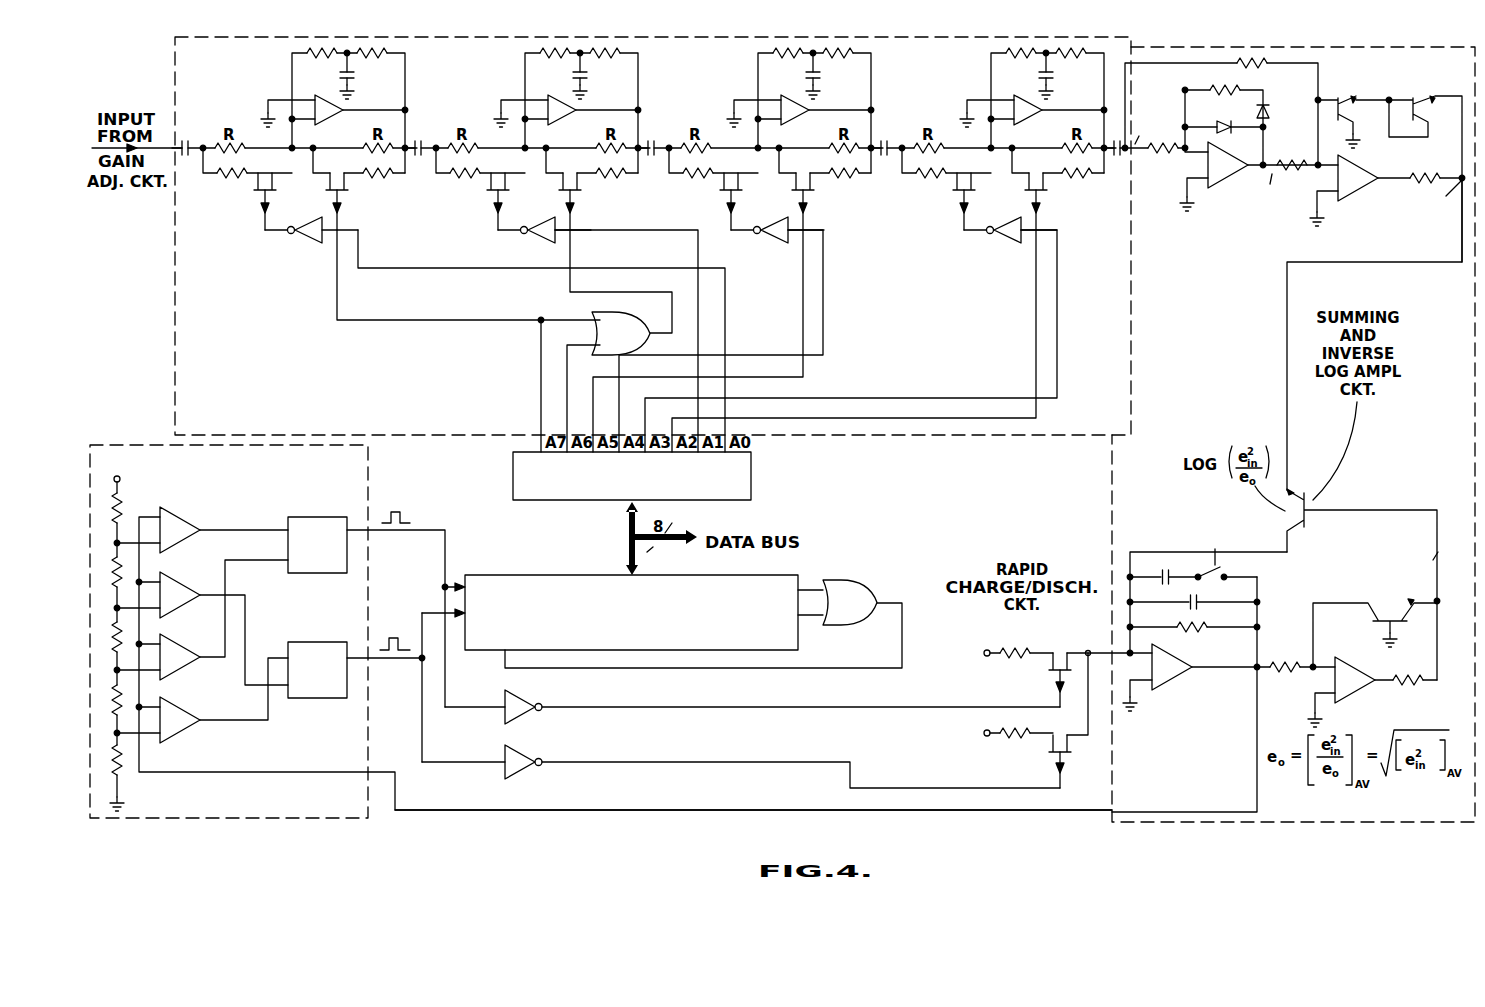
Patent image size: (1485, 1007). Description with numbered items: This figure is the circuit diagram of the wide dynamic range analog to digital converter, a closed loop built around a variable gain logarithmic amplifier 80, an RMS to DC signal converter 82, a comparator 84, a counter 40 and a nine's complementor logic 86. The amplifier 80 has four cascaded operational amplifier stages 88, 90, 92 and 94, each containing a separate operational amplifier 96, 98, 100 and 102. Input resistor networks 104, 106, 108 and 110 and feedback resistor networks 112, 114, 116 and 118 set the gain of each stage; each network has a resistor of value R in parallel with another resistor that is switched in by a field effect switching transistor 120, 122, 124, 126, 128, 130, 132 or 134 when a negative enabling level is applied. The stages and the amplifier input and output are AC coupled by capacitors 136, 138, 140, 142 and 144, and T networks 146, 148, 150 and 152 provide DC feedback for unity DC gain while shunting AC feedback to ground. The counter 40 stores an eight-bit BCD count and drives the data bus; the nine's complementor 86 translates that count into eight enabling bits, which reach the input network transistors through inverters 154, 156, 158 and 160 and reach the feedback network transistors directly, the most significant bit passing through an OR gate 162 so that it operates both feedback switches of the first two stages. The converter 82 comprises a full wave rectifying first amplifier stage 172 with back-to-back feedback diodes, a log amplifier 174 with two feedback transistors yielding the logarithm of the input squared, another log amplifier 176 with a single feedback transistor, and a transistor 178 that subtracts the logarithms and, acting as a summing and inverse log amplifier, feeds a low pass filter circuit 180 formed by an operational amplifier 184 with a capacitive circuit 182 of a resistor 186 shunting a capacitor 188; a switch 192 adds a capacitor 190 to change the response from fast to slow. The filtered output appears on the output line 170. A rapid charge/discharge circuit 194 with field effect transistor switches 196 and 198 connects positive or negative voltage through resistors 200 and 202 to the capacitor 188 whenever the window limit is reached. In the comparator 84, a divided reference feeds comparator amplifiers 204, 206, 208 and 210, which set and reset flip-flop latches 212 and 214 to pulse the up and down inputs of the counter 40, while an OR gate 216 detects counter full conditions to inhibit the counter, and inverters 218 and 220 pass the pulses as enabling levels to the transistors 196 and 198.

The counter 40 is at (596, 575).
The variable gain logarithmic amplifier 80 is at (360, 37).
The RMS to DC signal converter 82 is at (1386, 822).
The comparator 84 is at (601, 646).
The nine's complementor logic 86 is at (752, 480).
The first operational amplifier stage 88 is at (334, 110).
The second operational amplifier stage 90 is at (567, 110).
The third operational amplifier stage 92 is at (800, 110).
The fourth operational amplifier stage 94 is at (1033, 110).
The operational amplifier 96 is at (330, 96).
The operational amplifier 98 is at (553, 99).
The operational amplifier 100 is at (784, 99).
The operational amplifier 102 is at (1017, 99).
The input resistor network 104 is at (278, 166).
The input resistor network 106 is at (480, 173).
The input resistor network 108 is at (713, 173).
The input resistor network 110 is at (946, 173).
The feedback resistor network 112 is at (357, 166).
The feedback resistor network 114 is at (592, 173).
The feedback resistor network 116 is at (825, 173).
The feedback resistor network 118 is at (1058, 173).
The field effect switching transistor 120 is at (273, 193).
The field effect switching transistor 122 is at (346, 199).
The field effect switching transistor 124 is at (522, 210).
The field effect switching transistor 126 is at (595, 210).
The field effect switching transistor 128 is at (755, 210).
The field effect switching transistor 130 is at (828, 210).
The field effect switching transistor 132 is at (988, 210).
The field effect switching transistor 134 is at (1061, 210).
The coupling capacitor 136 is at (185, 141).
The coupling capacitor 138 is at (433, 136).
The coupling capacitor 140 is at (666, 136).
The coupling capacitor 142 is at (899, 136).
The coupling capacitor 144 is at (1118, 156).
The T network 146 is at (355, 71).
The T network 148 is at (600, 76).
The T network 150 is at (833, 76).
The T network 152 is at (1066, 76).
The inverter 154 is at (299, 244).
The inverter 156 is at (542, 239).
The inverter 158 is at (775, 239).
The inverter 160 is at (1008, 239).
The OR gate 162 is at (623, 353).
The output line 170 is at (1041, 810).
The first amplifier stage 172 is at (1272, 43).
The log amplifier 174 is at (1408, 95).
The log amplifier 176 is at (1442, 725).
The transistor 178 is at (1317, 523).
The low pass filter circuit 180 is at (1213, 662).
The capacitive circuit 182 is at (1222, 590).
The operational amplifier 184 is at (1178, 656).
The resistor 186 is at (1177, 625).
The capacitor 188 is at (1178, 599).
The capacitor 190 is at (1167, 571).
The switch 192 is at (1224, 568).
The rapid charge/discharge circuit 194 is at (1041, 704).
The field effect transistor switch 196 is at (1048, 691).
The field effect transistor switch 198 is at (1107, 771).
The resistor 200 is at (1029, 648).
The resistor 202 is at (1029, 738).
The comparator amplifier 204 is at (188, 519).
The comparator amplifier 206 is at (177, 582).
The comparator amplifier 208 is at (177, 644).
The comparator amplifier 210 is at (177, 707).
The flip-flop latch 212 is at (320, 518).
The flip-flop latch 214 is at (320, 643).
The OR gate 216 is at (840, 580).
The inverter 218 is at (523, 698).
The inverter 220 is at (523, 751).